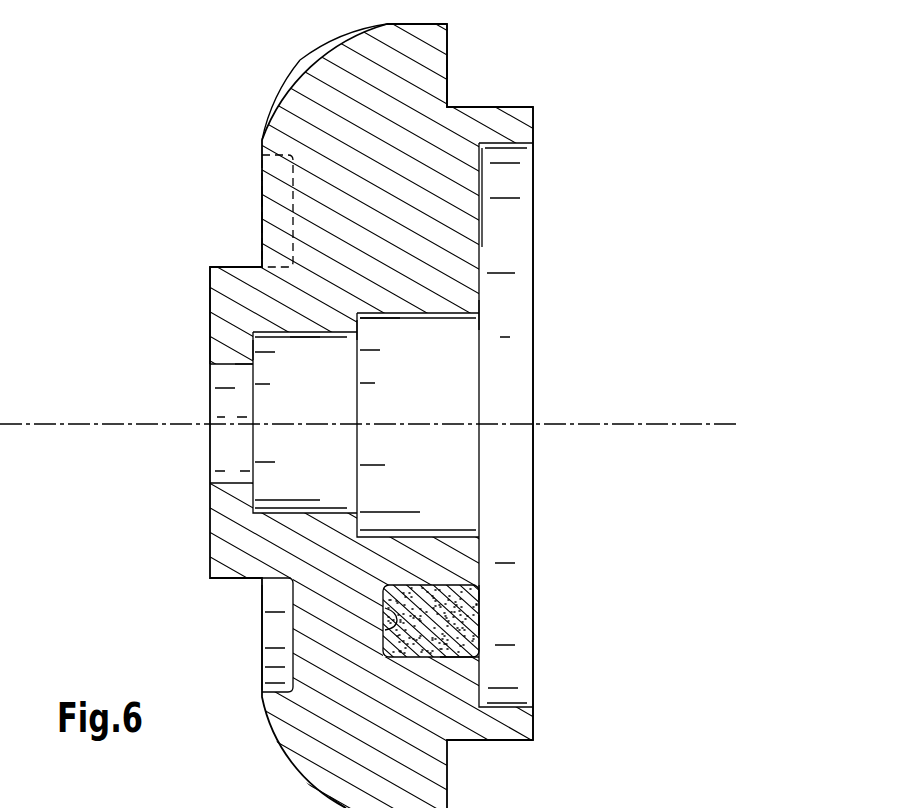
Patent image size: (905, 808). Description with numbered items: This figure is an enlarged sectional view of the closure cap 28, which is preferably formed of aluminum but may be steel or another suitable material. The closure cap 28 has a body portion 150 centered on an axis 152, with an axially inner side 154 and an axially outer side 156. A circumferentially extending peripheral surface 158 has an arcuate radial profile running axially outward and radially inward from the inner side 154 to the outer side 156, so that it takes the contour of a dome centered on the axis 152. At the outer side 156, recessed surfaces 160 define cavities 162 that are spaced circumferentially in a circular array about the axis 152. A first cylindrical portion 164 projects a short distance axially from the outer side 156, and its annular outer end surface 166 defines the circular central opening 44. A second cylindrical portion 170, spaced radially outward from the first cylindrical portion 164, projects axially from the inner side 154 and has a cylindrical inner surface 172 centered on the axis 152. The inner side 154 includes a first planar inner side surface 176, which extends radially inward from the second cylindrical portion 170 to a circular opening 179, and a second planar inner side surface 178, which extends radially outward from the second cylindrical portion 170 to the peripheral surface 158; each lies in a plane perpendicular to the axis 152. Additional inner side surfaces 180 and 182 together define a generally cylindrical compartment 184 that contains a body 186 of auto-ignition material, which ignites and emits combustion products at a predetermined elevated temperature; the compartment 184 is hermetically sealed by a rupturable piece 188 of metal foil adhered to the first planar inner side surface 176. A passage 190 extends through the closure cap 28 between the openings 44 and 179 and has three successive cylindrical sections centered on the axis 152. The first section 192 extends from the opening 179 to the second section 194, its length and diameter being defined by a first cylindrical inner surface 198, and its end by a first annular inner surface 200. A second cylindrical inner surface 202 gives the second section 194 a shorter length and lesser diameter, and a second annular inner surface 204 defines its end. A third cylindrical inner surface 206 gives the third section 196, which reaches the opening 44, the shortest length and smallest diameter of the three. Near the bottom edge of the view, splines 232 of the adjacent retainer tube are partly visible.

The closure cap 28 is at (148, 99).
The circular central opening 44 is at (205, 387).
The body portion 150 is at (346, 75).
The axis 152 is at (130, 420).
The inner side 154 is at (462, 60).
The outer side 156 is at (250, 236).
The peripheral surface 158 is at (305, 60).
The recessed surfaces 160 is at (288, 178).
The cavities 162 is at (262, 196).
The first cylindrical portion 164 is at (235, 290).
The annular outer end surface 166 is at (210, 306).
The second cylindrical portion 170 is at (531, 108).
The cylindrical inner surface 172 is at (514, 144).
The first planar inner side surface 176 is at (483, 288).
The second planar inner side surface 178 is at (449, 82).
The circular opening 179 is at (484, 340).
The additional inner side surface 180 is at (433, 645).
The additional inner side surface 182 is at (374, 605).
The compartment 184 is at (488, 601).
The body of auto-ignition material 186 is at (479, 623).
The rupturable piece of metal foil 188 is at (480, 657).
The passage 190 is at (457, 382).
The first section 192 is at (418, 425).
The second section 194 is at (305, 422).
The third section 196 is at (228, 452).
The first cylindrical inner surface 198 is at (395, 317).
The first annular inner surface 200 is at (367, 327).
The second cylindrical inner surface 202 is at (298, 333).
The second annular inner surface 204 is at (262, 348).
The third cylindrical inner surface 206 is at (243, 367).
The splines 232 is at (240, 802).